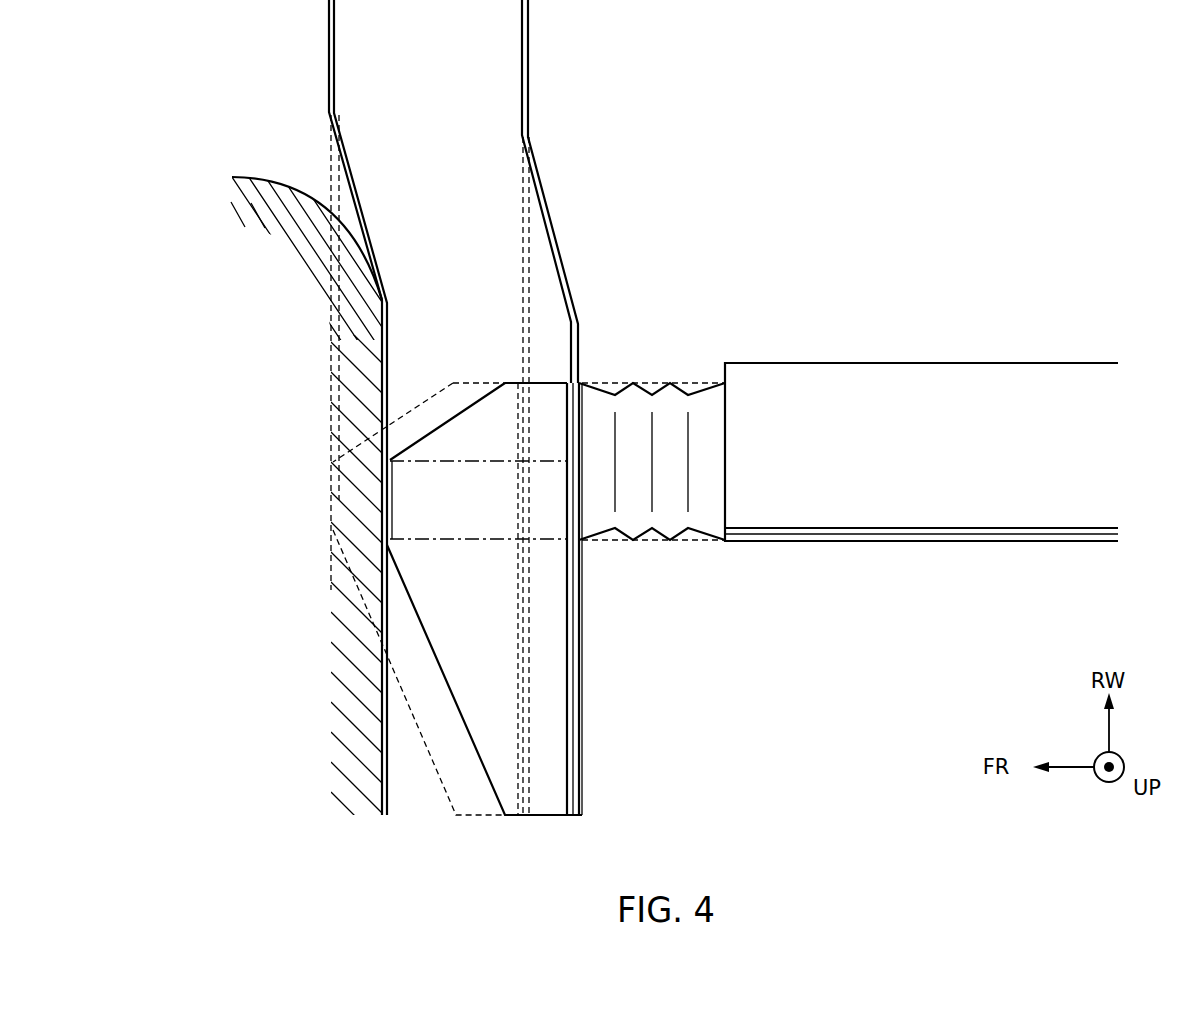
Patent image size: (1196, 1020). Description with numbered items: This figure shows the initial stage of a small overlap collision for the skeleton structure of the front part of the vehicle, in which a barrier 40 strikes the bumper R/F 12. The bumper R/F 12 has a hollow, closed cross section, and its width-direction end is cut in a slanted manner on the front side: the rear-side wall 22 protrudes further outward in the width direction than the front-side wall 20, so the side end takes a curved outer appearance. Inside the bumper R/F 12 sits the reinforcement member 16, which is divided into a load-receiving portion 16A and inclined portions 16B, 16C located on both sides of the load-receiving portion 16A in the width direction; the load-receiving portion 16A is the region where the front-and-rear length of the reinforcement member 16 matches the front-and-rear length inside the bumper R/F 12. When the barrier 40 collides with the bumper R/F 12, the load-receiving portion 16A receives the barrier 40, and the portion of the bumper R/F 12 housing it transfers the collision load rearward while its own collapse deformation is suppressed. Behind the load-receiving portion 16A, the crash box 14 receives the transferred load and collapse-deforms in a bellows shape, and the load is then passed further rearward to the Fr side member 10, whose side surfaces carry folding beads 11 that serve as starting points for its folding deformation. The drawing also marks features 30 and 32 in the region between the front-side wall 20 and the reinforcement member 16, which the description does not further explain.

The Fr side member 10 is at (921, 413).
The folding bead 11 is at (943, 531).
The bumper R/F 12 is at (595, 407).
The crash box 14 is at (655, 383).
The reinforcement member 16 is at (519, 584).
The load-receiving portion 16A is at (543, 518).
The inclined portion 16B is at (493, 418).
The inclined portion 16C is at (542, 683).
The front-side wall 20 is at (330, 47).
The rear-side wall 22 is at (528, 47).
The opening 30 is at (393, 501).
The gap 32 is at (567, 488).
The barrier 40 is at (278, 175).